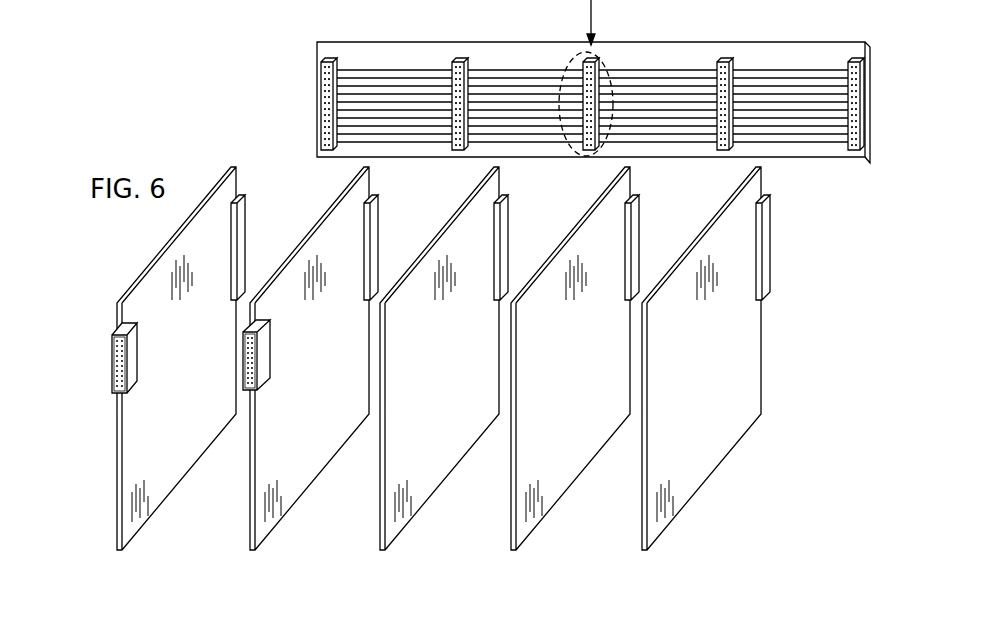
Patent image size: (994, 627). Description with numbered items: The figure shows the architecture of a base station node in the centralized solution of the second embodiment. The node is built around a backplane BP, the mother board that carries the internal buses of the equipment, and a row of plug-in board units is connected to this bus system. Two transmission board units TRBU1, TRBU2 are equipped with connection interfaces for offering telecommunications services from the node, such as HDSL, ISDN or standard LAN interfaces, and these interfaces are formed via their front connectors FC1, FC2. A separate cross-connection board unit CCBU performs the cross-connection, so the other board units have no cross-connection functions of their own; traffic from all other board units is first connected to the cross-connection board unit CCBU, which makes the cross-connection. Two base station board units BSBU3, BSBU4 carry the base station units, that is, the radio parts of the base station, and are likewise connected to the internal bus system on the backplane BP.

The backplane BP is at (811, 44).
The front connector FC1 is at (112, 365).
The front connector FC2 is at (268, 357).
The transmission board unit TRBU1 is at (117, 458).
The transmission board unit TRBU2 is at (257, 546).
The cross-connection board unit CCBU is at (387, 545).
The base station board unit BSBU3 is at (519, 548).
The base station board unit BSBU4 is at (762, 386).